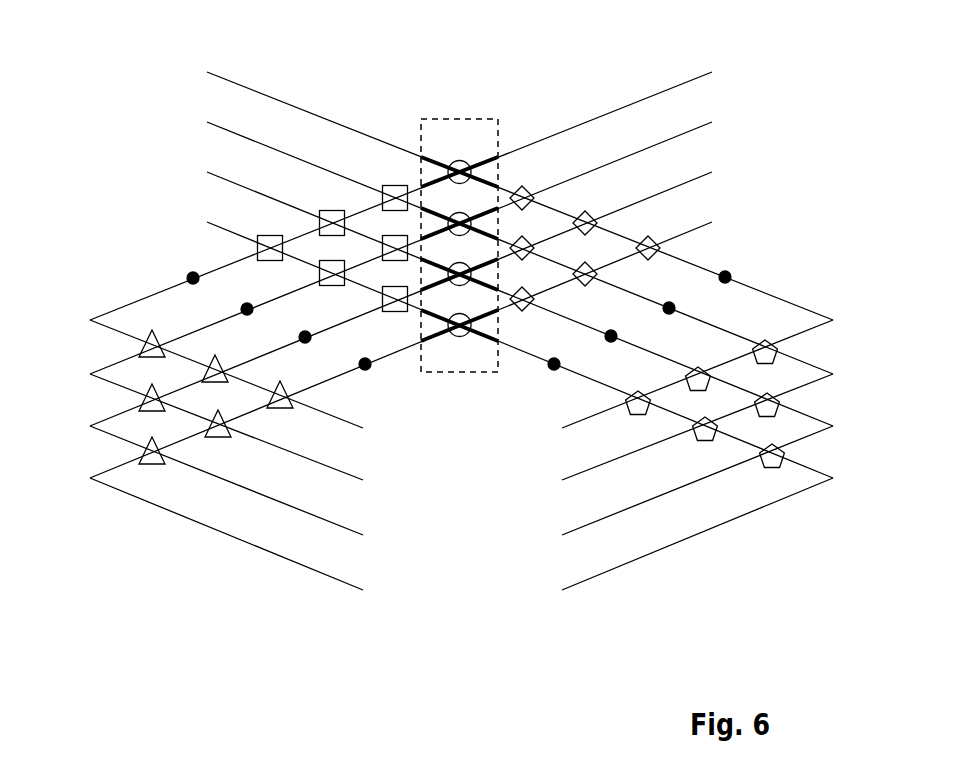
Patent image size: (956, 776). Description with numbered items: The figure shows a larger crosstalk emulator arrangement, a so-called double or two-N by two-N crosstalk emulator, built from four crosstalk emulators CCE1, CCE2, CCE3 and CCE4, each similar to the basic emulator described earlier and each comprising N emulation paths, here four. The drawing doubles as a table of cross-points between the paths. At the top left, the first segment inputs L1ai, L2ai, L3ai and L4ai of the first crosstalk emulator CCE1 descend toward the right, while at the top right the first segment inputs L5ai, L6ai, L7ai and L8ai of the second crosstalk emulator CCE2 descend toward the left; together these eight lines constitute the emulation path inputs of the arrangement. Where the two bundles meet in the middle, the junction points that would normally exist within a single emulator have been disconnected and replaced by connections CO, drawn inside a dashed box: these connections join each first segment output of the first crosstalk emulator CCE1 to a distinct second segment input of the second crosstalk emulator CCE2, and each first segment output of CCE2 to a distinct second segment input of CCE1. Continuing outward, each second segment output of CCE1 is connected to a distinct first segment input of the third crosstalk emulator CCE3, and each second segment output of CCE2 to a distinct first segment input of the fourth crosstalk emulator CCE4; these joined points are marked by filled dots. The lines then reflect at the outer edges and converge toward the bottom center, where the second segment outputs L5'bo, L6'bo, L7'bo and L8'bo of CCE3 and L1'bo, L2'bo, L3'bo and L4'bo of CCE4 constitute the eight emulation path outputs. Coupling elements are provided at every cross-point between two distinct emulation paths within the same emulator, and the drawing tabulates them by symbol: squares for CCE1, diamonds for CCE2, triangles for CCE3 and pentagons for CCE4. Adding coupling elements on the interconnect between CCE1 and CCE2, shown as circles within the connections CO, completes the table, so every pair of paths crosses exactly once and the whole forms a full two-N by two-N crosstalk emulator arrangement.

The first crosstalk emulator CCE1 is at (338, 39).
The second crosstalk emulator CCE2 is at (690, 39).
The third crosstalk emulator CCE3 is at (257, 593).
The fourth crosstalk emulator CCE4 is at (780, 595).
The connections CO is at (460, 118).
The first segment input L1ai is at (488, 184).
The first segment input L2ai is at (488, 240).
The first segment input L3ai is at (488, 292).
The first segment input L4ai is at (488, 343).
The first segment input L5ai is at (434, 184).
The first segment input L6ai is at (434, 241).
The first segment input L7ai is at (434, 292).
The first segment input L8ai is at (434, 344).
The second segment output L1'bo is at (658, 385).
The second segment output L2'bo is at (658, 438).
The second segment output L3'bo is at (658, 491).
The second segment output L4'bo is at (658, 544).
The second segment output L5'bo is at (263, 385).
The second segment output L6'bo is at (263, 438).
The second segment output L7'bo is at (263, 491).
The second segment output L8'bo is at (263, 544).